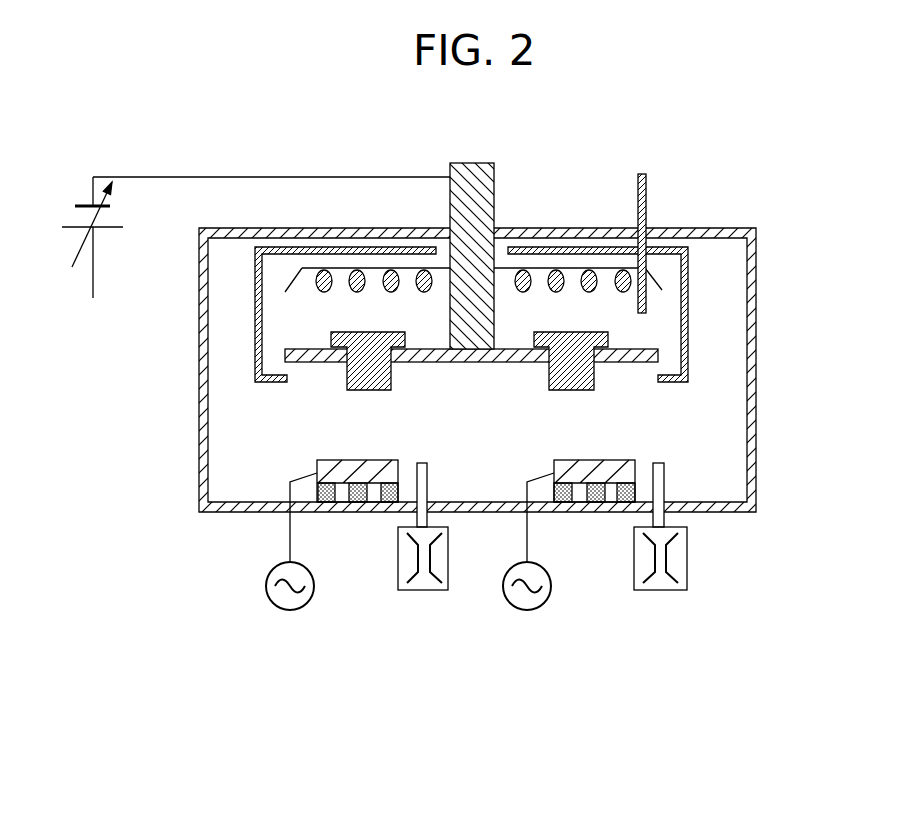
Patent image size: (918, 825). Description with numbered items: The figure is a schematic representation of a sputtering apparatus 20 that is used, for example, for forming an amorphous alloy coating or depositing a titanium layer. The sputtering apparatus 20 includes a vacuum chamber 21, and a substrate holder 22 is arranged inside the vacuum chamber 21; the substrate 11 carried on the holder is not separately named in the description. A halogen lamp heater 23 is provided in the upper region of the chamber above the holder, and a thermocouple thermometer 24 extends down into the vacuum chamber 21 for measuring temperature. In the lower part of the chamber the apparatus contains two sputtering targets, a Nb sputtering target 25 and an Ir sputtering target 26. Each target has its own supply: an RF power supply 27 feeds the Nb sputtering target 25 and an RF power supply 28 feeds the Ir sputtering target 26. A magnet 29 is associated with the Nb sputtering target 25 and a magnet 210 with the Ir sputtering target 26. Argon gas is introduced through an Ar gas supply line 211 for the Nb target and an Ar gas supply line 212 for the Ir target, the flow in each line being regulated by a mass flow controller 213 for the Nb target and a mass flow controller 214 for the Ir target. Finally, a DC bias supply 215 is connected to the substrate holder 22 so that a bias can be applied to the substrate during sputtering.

The sputtering apparatus 20 is at (597, 124).
The vacuum chamber 21 is at (756, 352).
The substrate holder 22 is at (633, 362).
The substrate 11 is at (337, 392).
The halogen lamp heater 23 is at (324, 270).
The thermocouple thermometer 24 is at (646, 200).
The Nb sputtering target 25 is at (358, 490).
The Ir sputtering target 26 is at (593, 490).
The RF power supply for the Nb sputtering target 27 is at (290, 610).
The RF power supply for the Ir sputtering target 28 is at (550, 598).
The magnet for the Nb sputtering target 29 is at (328, 502).
The magnet for the Ir sputtering target 210 is at (562, 502).
The Ar gas supply line for the Nb sputtering target 211 is at (427, 517).
The Ar gas supply line for the Ir sputtering target 212 is at (664, 517).
The mass flow controller for the Nb sputtering target 213 is at (423, 590).
The mass flow controller for the Ir sputtering target 214 is at (660, 590).
The DC bias supply 215 is at (83, 202).